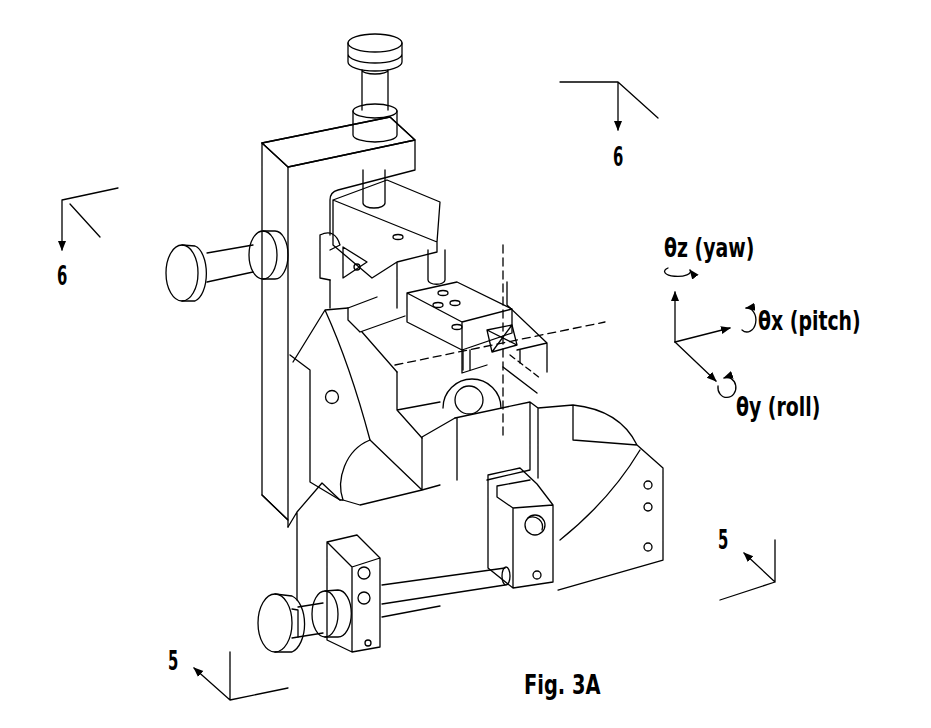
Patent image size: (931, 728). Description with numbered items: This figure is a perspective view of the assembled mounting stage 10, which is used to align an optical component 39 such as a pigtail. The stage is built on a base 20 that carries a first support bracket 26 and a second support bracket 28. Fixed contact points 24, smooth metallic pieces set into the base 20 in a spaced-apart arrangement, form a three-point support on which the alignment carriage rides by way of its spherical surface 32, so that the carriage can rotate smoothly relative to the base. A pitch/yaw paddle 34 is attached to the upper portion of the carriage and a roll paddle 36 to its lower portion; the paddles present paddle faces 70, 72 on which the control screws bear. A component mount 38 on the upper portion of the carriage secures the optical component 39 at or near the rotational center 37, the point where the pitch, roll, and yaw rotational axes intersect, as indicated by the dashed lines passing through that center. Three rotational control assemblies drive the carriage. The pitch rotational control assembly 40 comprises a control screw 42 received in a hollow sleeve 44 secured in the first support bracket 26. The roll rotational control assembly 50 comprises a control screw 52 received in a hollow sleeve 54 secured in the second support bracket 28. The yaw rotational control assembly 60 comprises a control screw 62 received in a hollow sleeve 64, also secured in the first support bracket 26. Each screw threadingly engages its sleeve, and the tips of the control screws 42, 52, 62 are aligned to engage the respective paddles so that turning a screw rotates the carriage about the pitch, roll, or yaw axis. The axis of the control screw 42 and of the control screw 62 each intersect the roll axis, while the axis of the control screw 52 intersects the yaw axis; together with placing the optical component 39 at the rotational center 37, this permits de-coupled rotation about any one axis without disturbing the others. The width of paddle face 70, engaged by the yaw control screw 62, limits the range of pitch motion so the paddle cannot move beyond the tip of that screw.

The mounting stage 10 is at (134, 170).
The base 20 is at (288, 433).
The fixed contact points 24 is at (293, 523).
The first support bracket 26 is at (292, 148).
The second support bracket 28 is at (368, 628).
The spherical surface 32 is at (368, 408).
The pitch/yaw paddle 34 is at (404, 223).
The roll paddle 36 is at (540, 553).
The rotational center 37 is at (527, 338).
The component mount 38 is at (360, 351).
The optical component 39 is at (487, 290).
The pitch rotational control assembly 40 is at (328, 59).
The control screw 42 is at (375, 91).
The hollow sleeve 44 is at (388, 128).
The roll rotational control assembly 50 is at (410, 630).
The control screw 52 is at (270, 625).
The hollow sleeve 54 is at (340, 625).
The yaw rotational control assembly 60 is at (222, 236).
The control screw 62 is at (177, 270).
The hollow sleeve 64 is at (270, 242).
The paddle face 70 is at (365, 249).
The paddle face 72 is at (397, 234).